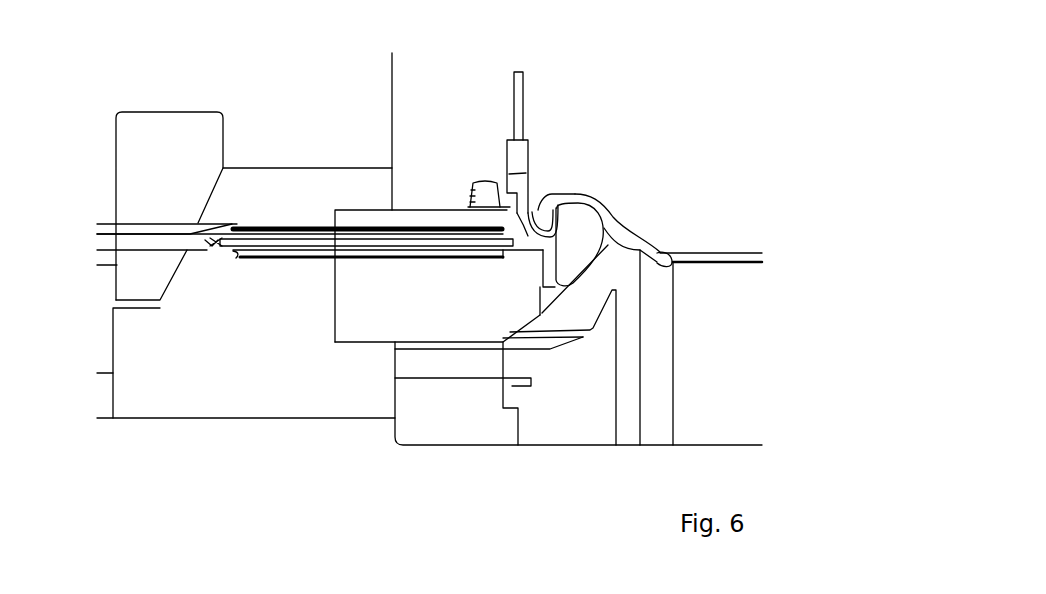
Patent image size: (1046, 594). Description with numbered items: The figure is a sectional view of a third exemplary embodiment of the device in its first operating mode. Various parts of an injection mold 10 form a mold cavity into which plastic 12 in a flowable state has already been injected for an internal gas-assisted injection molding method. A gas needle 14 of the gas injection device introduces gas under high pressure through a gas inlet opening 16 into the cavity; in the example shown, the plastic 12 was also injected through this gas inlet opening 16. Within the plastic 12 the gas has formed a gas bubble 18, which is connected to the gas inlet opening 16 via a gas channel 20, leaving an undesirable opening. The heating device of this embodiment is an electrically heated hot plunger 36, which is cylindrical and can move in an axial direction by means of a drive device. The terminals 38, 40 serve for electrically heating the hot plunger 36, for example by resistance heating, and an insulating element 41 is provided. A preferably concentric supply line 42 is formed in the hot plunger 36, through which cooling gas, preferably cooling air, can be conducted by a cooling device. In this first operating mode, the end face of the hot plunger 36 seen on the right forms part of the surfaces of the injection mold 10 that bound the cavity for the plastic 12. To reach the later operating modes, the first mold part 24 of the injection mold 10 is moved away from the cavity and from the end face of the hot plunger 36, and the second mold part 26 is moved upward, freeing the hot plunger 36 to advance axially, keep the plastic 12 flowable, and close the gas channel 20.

The injection mold 10 is at (640, 121).
The plastic 12 is at (627, 227).
The gas needle 14 is at (526, 190).
The gas inlet opening 16 is at (533, 207).
The gas bubble 18 is at (578, 228).
The gas channel 20 is at (511, 205).
The first mold part 24 is at (362, 323).
The second mold part 26 is at (185, 125).
The hot plunger 36 is at (282, 237).
The terminal 38 is at (228, 227).
The terminal 40 is at (228, 251).
The insulating element 41 is at (200, 237).
The supply line 42 is at (340, 243).